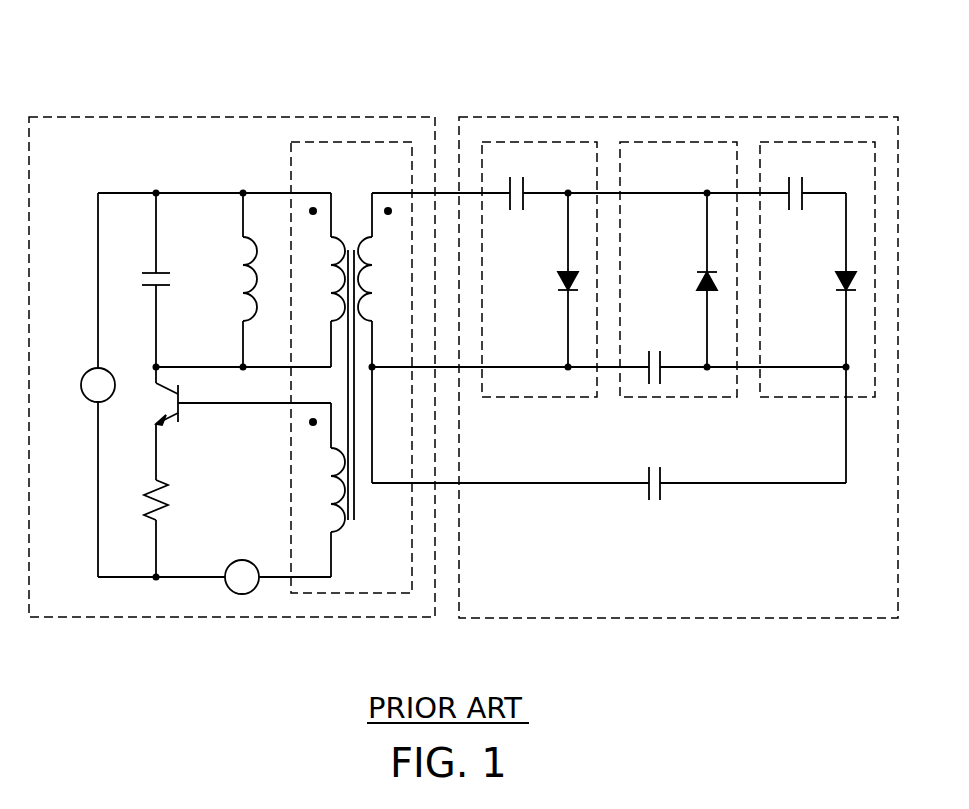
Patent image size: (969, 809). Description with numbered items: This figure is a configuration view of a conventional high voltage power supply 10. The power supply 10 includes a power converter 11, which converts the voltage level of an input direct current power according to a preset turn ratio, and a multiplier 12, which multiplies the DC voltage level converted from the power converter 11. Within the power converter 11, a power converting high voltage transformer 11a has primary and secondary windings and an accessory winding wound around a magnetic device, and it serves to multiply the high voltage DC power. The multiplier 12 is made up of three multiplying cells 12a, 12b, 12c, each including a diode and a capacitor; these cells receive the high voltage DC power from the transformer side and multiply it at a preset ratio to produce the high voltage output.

The conventional high voltage power supply 10 is at (468, 39).
The power converter 11 is at (231, 117).
The power converting high voltage transformer 11a is at (347, 142).
The multiplier 12 is at (492, 117).
The multiplying cell 12a is at (535, 142).
The multiplying cell 12b is at (675, 142).
The multiplying cell 12c is at (814, 142).